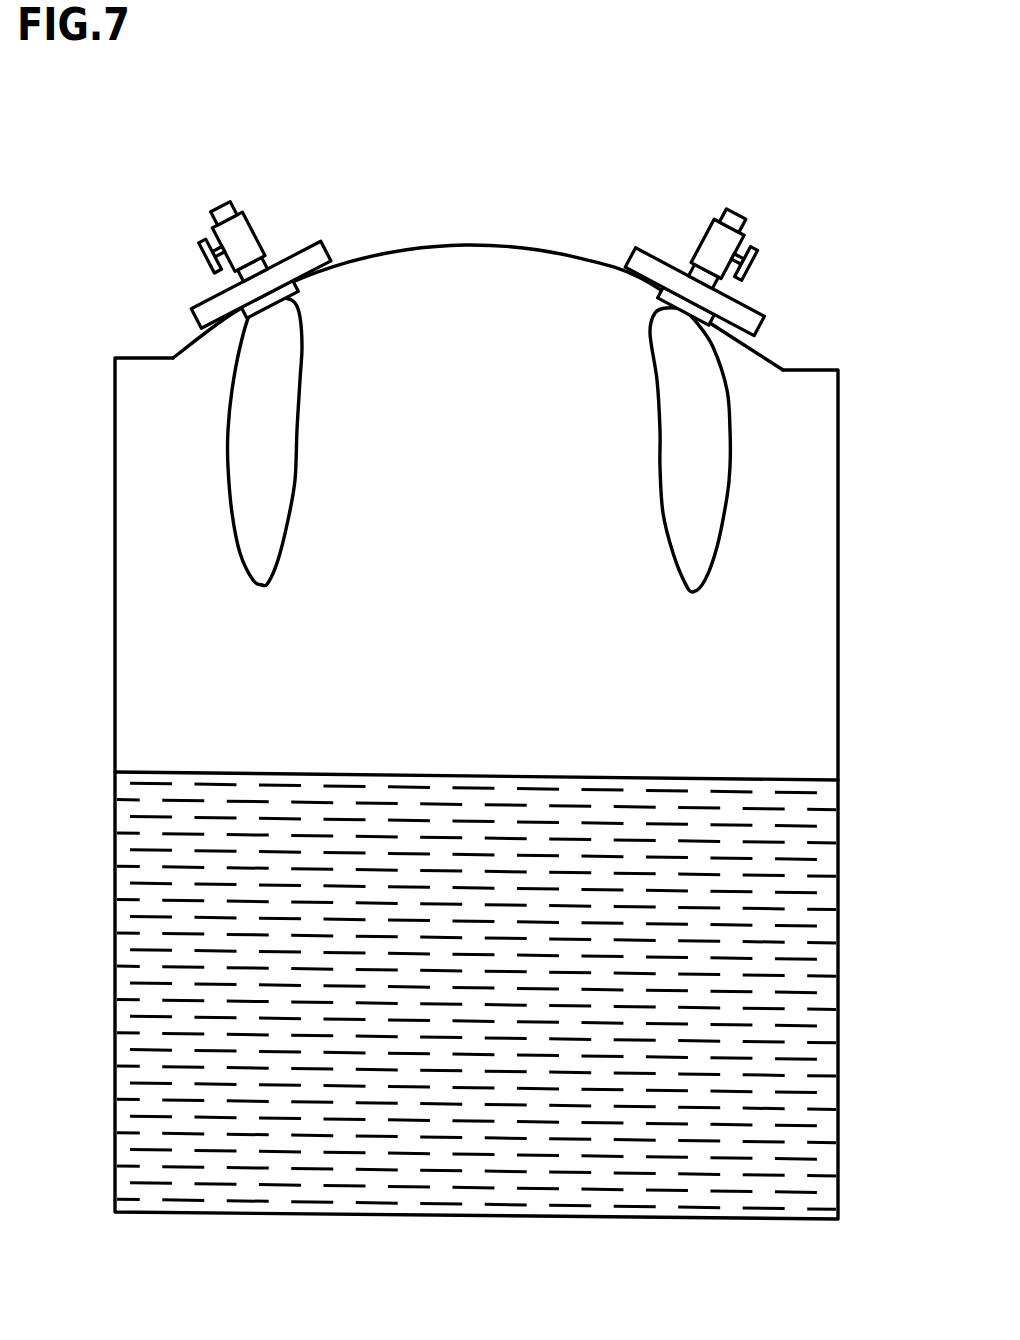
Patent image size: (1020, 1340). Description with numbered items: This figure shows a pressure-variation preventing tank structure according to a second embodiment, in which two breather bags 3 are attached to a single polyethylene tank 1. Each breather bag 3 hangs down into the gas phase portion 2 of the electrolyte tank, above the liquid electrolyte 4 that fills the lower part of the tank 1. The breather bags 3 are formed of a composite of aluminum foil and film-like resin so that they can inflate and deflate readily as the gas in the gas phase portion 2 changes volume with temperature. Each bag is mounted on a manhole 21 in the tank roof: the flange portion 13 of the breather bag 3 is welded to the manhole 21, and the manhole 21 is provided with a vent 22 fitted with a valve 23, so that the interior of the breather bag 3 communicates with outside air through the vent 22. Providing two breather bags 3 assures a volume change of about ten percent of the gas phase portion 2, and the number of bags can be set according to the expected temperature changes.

The polyethylene tank 1 is at (840, 641).
The gas phase portion 2 is at (230, 675).
The breather bag 3 is at (262, 477).
The liquid 4 is at (240, 999).
The flange portion 13 is at (246, 314).
The manhole 21 is at (301, 250).
The vent 22 is at (219, 202).
The valve 23 is at (199, 260).